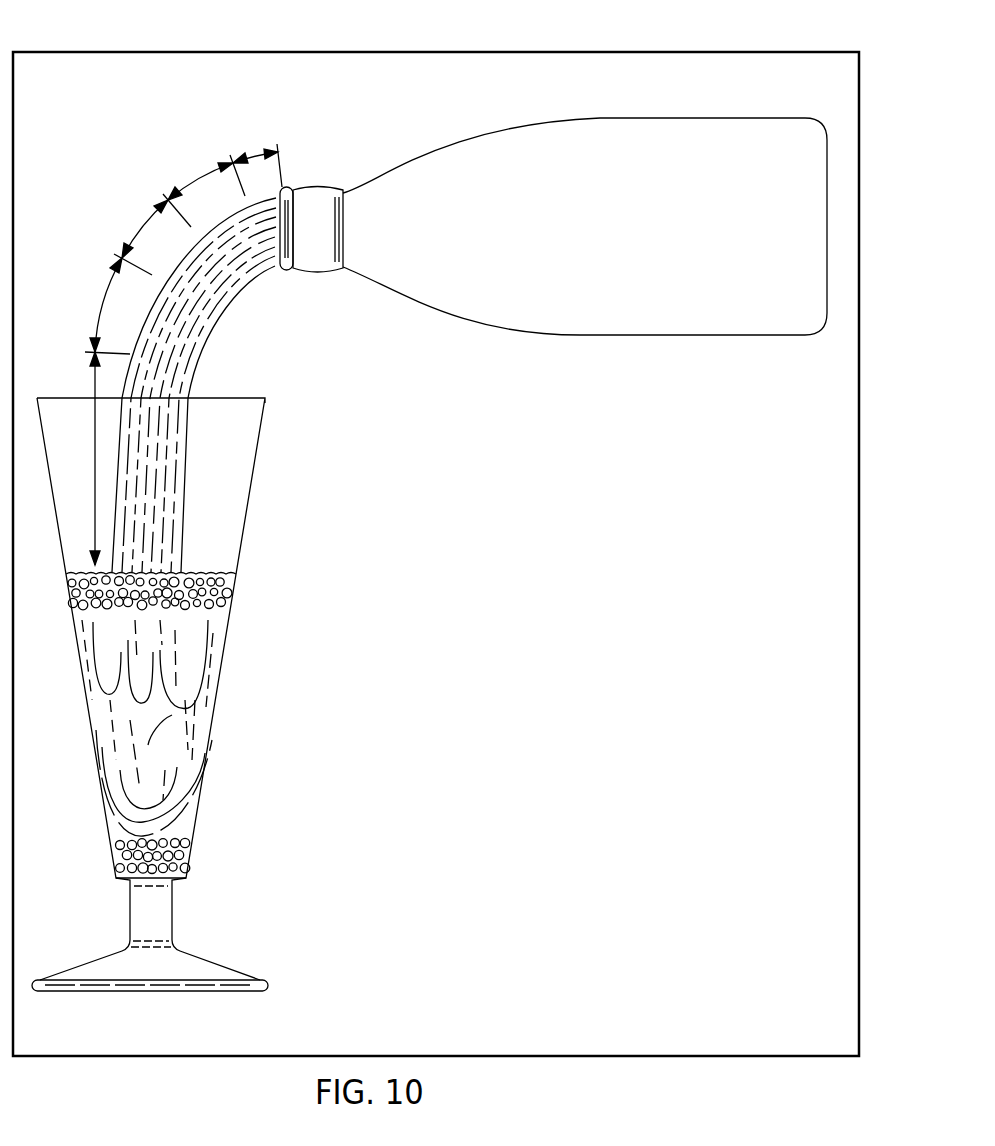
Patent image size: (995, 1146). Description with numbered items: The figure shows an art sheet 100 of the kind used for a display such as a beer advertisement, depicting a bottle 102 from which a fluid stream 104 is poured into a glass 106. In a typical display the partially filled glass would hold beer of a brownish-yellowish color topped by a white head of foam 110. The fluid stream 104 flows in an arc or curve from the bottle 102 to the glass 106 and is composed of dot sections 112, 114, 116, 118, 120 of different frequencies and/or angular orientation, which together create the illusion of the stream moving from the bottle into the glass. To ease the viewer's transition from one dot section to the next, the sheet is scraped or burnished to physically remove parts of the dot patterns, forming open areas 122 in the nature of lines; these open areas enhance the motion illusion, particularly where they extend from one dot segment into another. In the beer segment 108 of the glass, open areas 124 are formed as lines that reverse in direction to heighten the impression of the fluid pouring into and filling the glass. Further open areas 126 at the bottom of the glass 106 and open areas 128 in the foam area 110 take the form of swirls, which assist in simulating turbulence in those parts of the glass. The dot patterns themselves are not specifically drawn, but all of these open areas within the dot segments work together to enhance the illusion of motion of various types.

The art sheet 100 is at (450, 52).
The bottle 102 is at (568, 336).
The fluid stream 104 is at (258, 283).
The glass 106 is at (258, 449).
The beer segment 108 is at (206, 724).
The head of foam 110 is at (230, 593).
The dot section 112 is at (257, 150).
The dot section 114 is at (198, 178).
The dot section 116 is at (145, 230).
The dot section 118 is at (110, 294).
The dot section 120 is at (92, 378).
The open areas 122 is at (172, 353).
The open areas 124 is at (95, 678).
The open areas 126 is at (190, 850).
The open areas 128 is at (77, 590).